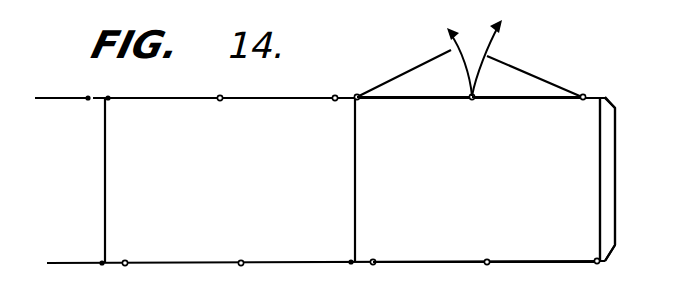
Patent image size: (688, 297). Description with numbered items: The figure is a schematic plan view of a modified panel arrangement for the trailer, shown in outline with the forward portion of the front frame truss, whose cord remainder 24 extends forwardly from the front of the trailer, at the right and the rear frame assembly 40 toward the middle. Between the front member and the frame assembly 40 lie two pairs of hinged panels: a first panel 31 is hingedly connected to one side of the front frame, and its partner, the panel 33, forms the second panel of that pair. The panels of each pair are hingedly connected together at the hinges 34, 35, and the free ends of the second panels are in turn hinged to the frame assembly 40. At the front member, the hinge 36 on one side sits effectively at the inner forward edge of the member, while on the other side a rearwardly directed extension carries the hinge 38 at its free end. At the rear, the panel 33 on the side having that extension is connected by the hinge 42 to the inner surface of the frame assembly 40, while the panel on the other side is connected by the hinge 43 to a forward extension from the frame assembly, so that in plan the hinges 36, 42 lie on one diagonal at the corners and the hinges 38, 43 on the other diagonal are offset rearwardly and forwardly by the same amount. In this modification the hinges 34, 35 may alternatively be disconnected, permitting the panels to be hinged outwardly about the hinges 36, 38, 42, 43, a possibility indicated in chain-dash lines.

The remainder of the cord 24 is at (607, 175).
The panel 31 is at (533, 98).
The panel 33 is at (432, 98).
The hinge 34 is at (488, 257).
The hinge 35 is at (472, 99).
The hinge 36 is at (595, 253).
The hinge 38 is at (584, 99).
The frame assembly 40 is at (353, 162).
The hinge 42 is at (361, 100).
The hinge 43 is at (373, 256).